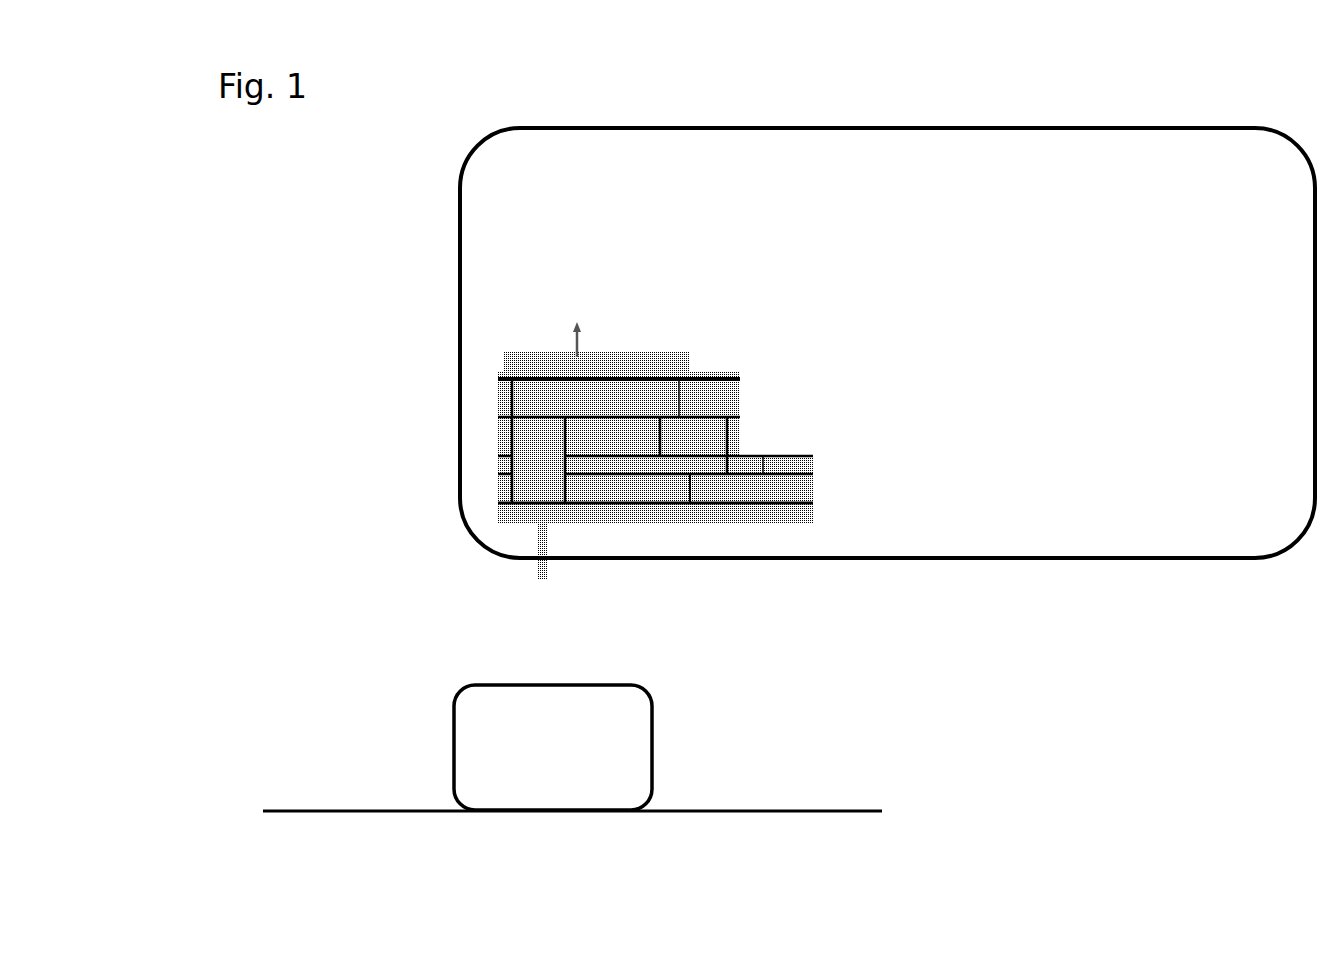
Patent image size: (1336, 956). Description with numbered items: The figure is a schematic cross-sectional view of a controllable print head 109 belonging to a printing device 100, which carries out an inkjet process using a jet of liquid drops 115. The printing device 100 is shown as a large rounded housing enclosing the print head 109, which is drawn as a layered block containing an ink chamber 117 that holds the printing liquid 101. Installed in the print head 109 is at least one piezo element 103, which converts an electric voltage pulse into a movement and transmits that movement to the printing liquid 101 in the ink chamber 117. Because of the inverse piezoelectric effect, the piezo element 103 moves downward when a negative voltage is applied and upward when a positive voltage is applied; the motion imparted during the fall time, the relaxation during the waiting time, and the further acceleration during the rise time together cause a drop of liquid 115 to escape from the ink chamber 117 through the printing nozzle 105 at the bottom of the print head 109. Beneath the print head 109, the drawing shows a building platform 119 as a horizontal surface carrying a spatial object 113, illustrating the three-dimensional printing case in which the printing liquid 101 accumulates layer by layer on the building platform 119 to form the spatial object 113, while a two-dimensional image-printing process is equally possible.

The printing device 100 is at (1135, 242).
The printing liquid 101 is at (672, 382).
The piezo element 103 is at (597, 373).
The ink chamber 117 is at (540, 390).
The print head 109 is at (513, 397).
The printing nozzle 105 is at (530, 512).
The drop of liquid 115 is at (530, 567).
The spatial object 113 is at (620, 748).
The building platform 119 is at (858, 810).